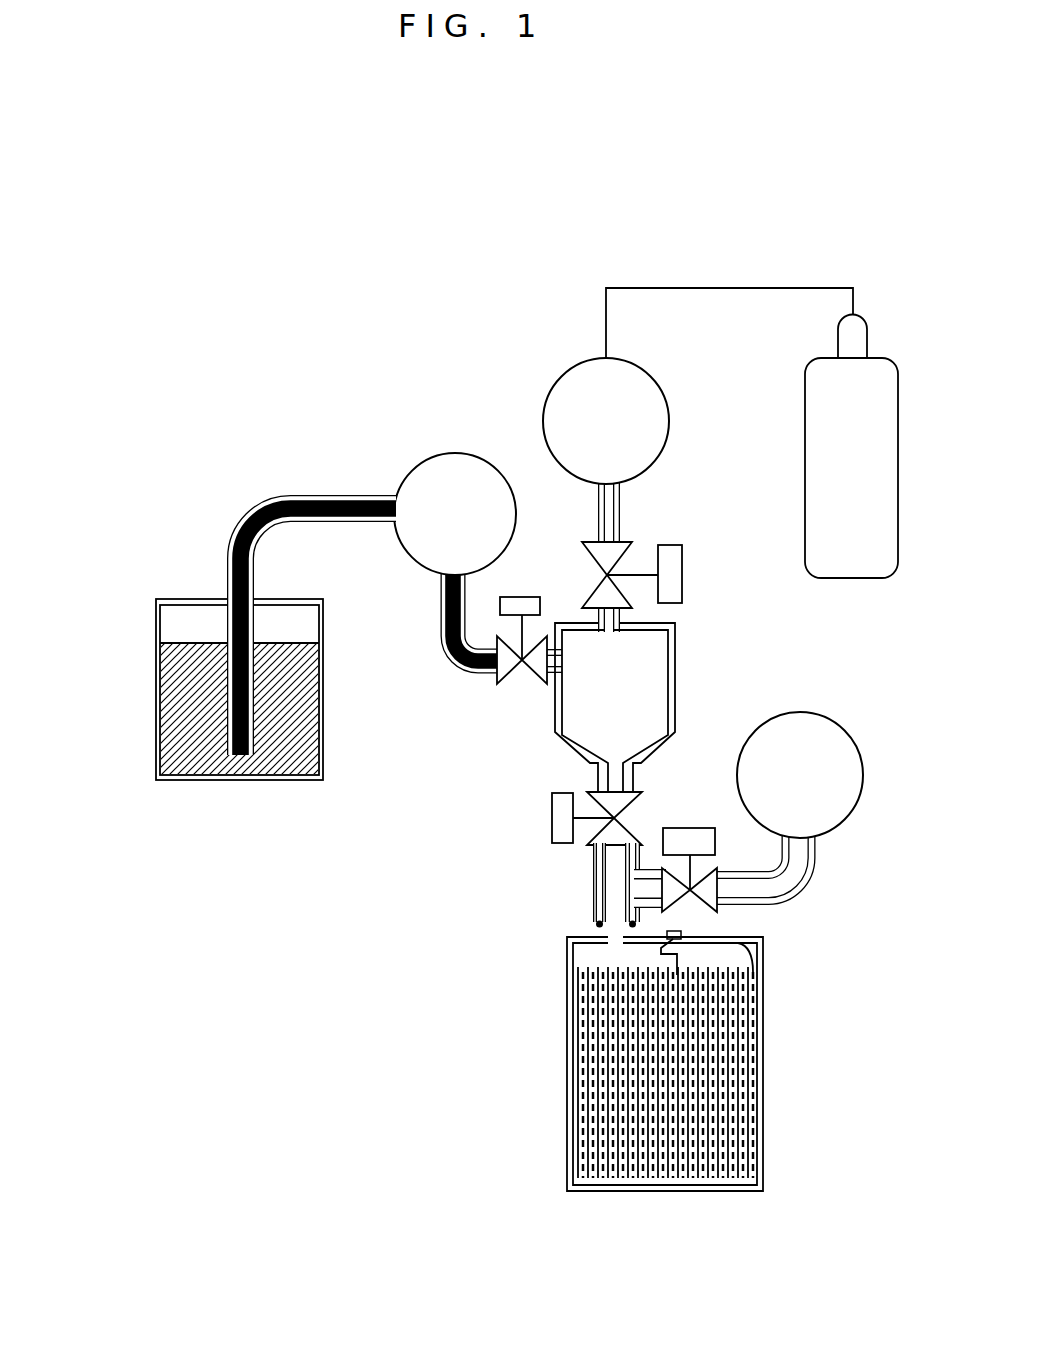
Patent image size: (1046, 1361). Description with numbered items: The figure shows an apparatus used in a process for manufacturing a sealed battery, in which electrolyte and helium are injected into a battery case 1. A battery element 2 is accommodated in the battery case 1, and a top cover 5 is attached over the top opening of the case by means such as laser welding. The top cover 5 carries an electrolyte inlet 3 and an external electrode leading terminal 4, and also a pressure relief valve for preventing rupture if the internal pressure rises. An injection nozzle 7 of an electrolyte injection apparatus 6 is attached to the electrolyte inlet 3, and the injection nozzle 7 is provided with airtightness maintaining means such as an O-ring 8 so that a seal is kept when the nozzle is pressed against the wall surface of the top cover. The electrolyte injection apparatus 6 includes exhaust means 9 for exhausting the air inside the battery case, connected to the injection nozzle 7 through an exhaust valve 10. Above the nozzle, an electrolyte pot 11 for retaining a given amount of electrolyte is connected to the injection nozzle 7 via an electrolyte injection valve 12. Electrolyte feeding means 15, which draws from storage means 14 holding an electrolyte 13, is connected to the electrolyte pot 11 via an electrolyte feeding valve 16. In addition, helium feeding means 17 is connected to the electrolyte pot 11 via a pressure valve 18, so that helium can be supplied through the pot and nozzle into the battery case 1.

The battery case 1 is at (770, 1060).
The battery element 2 is at (597, 1048).
The electrolyte inlet 3 is at (617, 947).
The external electrode leading terminal 4 is at (673, 932).
The top cover 5 is at (568, 935).
The electrolyte injection apparatus 6 is at (235, 443).
The injection nozzle 7 is at (597, 862).
The O-ring 8 is at (595, 920).
The exhaust means 9 is at (830, 758).
The exhaust valve 10 is at (692, 880).
The electrolyte pot 11 is at (685, 658).
The electrolyte injection valve 12 is at (558, 823).
The electrolyte 13 is at (292, 677).
The storage means 14 is at (152, 693).
The electrolyte feeding means 15 is at (432, 490).
The electrolyte feeding valve 16 is at (518, 673).
The helium feeding means 17 is at (622, 385).
The pressure valve 18 is at (635, 567).